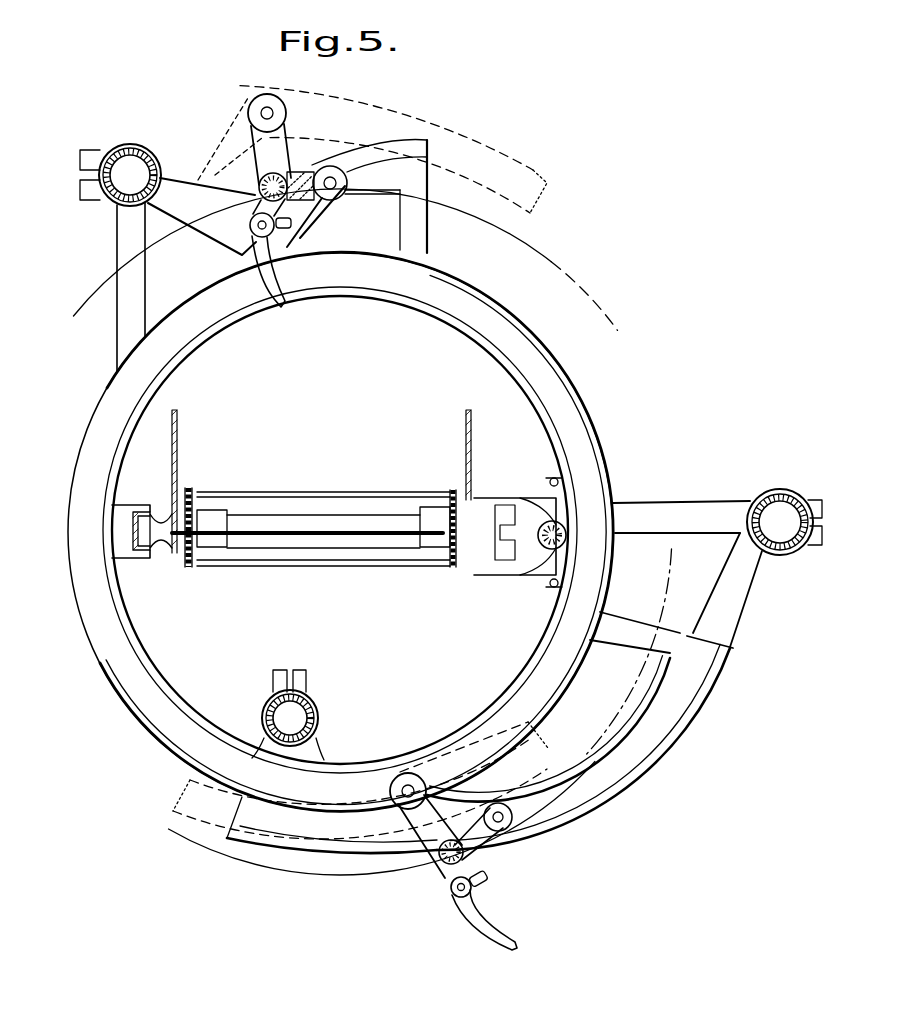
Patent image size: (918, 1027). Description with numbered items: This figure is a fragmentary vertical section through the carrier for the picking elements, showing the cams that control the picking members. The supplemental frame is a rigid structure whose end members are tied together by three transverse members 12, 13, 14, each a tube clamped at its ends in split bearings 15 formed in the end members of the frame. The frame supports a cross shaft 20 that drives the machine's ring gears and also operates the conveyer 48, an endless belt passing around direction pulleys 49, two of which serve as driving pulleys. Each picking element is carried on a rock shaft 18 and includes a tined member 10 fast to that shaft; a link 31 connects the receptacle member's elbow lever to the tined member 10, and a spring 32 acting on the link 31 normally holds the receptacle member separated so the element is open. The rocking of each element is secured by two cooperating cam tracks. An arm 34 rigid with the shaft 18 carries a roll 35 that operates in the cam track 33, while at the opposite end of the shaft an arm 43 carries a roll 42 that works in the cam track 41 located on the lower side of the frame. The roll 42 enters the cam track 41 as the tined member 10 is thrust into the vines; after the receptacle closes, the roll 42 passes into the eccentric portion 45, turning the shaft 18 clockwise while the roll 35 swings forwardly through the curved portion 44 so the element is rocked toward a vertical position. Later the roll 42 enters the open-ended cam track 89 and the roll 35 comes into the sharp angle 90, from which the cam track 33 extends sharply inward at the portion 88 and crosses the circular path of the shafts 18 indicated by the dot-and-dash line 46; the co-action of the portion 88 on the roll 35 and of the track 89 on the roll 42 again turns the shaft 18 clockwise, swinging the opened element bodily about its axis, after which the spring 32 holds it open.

The tined member 10 is at (256, 292).
The transverse member 12 is at (770, 498).
The transverse member 13 is at (122, 150).
The transverse member 14 is at (320, 722).
The split bearing 15 is at (144, 150).
The rock shaft 18 is at (283, 178).
The shaft 20 is at (548, 542).
The link 31 is at (488, 886).
The spring 32 is at (242, 255).
The cam track 33 is at (556, 165).
The arm 34 is at (250, 140).
The roll 35 is at (264, 100).
The cam track 41 is at (368, 868).
The roll 42 is at (345, 180).
The arm 43 is at (318, 170).
The curved portion 44 is at (445, 757).
The eccentric portion 45 is at (530, 806).
The dot-and-dash line 46 is at (373, 471).
The conveyer 48 is at (298, 490).
The direction pulley 49 is at (192, 548).
The inwardly-directed portion 88 is at (222, 176).
The open-ended cam track 89 is at (356, 200).
The sharp angle 90 is at (242, 105).